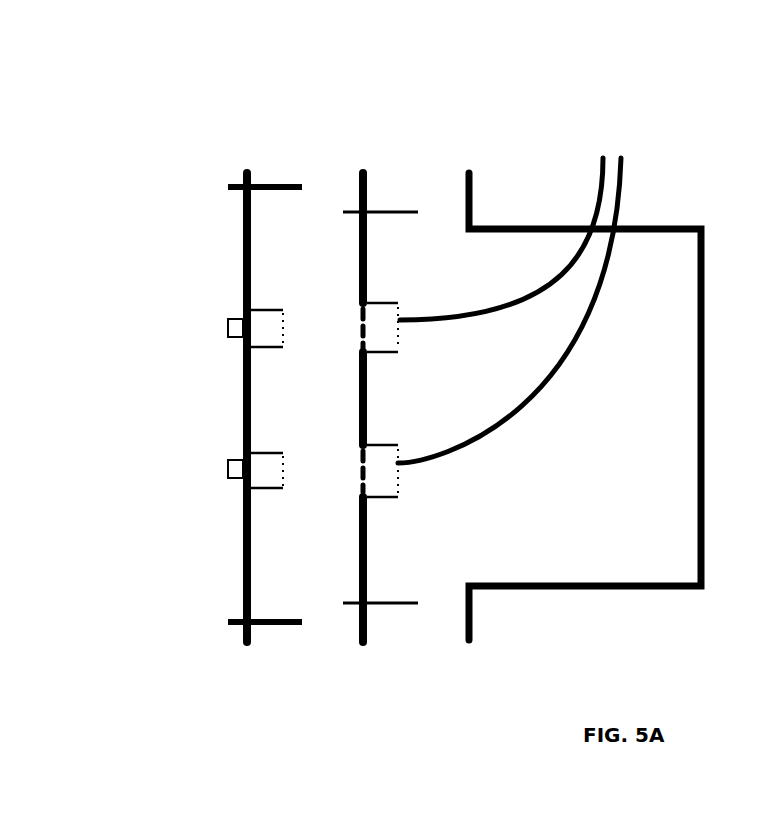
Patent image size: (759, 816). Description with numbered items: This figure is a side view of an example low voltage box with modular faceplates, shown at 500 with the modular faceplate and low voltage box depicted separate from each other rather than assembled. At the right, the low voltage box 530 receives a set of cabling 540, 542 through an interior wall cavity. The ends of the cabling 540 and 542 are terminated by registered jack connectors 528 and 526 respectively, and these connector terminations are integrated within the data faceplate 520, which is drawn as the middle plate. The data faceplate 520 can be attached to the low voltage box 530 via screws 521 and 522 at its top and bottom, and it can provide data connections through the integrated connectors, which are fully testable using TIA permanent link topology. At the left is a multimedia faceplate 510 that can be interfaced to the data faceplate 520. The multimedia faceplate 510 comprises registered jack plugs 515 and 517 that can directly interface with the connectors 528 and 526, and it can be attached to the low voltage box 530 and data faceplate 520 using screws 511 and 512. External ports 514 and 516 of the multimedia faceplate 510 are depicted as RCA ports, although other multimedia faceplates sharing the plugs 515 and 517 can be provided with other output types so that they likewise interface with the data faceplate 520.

The separated view of modular faceplate and low voltage box 500 is at (318, 96).
The multimedia faceplate 510 is at (243, 250).
The screw 511 is at (228, 185).
The screw 512 is at (228, 620).
The external port 514 is at (228, 319).
The RJ-45 plug 515 is at (263, 347).
The external port 516 is at (228, 460).
The RJ-45 plug 517 is at (273, 488).
The data faceplate 520 is at (367, 550).
The screw 521 is at (380, 212).
The screw 522 is at (398, 605).
The RJ-45 connector 526 is at (360, 453).
The RJ-45 connector 528 is at (360, 310).
The low voltage box 530 is at (673, 227).
The cabling 540 is at (507, 307).
The cabling 542 is at (507, 418).